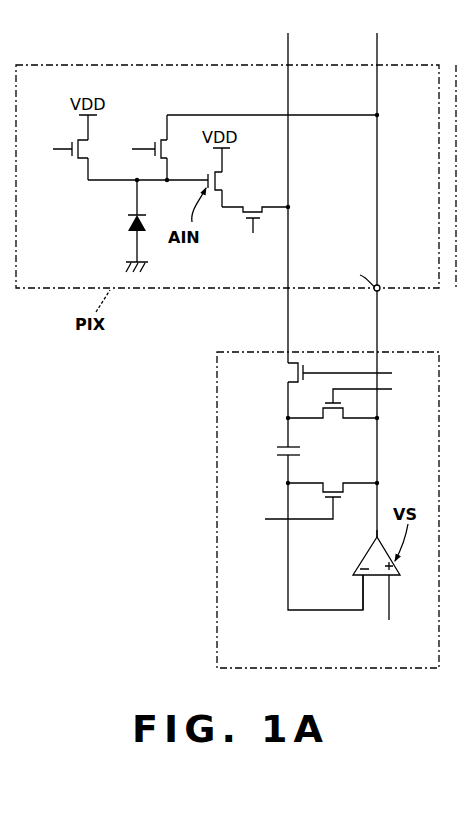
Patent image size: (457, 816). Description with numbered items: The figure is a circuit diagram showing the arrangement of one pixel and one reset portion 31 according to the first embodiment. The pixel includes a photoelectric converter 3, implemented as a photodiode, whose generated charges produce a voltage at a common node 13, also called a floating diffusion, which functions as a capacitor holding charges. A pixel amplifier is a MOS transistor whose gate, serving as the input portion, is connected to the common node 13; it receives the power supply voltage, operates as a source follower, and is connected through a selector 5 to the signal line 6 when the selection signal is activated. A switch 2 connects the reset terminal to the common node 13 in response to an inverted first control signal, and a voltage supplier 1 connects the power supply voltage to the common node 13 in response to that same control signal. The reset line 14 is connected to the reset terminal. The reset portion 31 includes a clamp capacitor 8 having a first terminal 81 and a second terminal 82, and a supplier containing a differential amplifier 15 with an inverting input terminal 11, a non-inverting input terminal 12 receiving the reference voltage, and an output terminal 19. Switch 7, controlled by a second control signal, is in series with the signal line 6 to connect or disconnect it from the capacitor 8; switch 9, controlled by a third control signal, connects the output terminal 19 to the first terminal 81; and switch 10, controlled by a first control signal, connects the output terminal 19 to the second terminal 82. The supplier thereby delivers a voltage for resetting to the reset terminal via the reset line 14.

The voltage supplier 1 is at (72, 160).
The switch 2 is at (158, 135).
The photoelectric converter 3 is at (124, 222).
The selector 5 is at (253, 204).
The signal line 6 is at (287, 318).
The switch 7 is at (287, 373).
The capacitor 8 is at (267, 452).
The first terminal 81 is at (283, 445).
The second terminal 82 is at (283, 458).
The switch 9 is at (334, 420).
The switch 10 is at (333, 481).
The inverting input terminal 11 is at (358, 583).
The non-inverting input terminal 12 is at (395, 584).
The common node 13 is at (103, 182).
The reset line 14 is at (378, 318).
The differential amplifier 15 is at (361, 566).
The output terminal 19 is at (373, 535).
The reset portion 31 is at (216, 496).